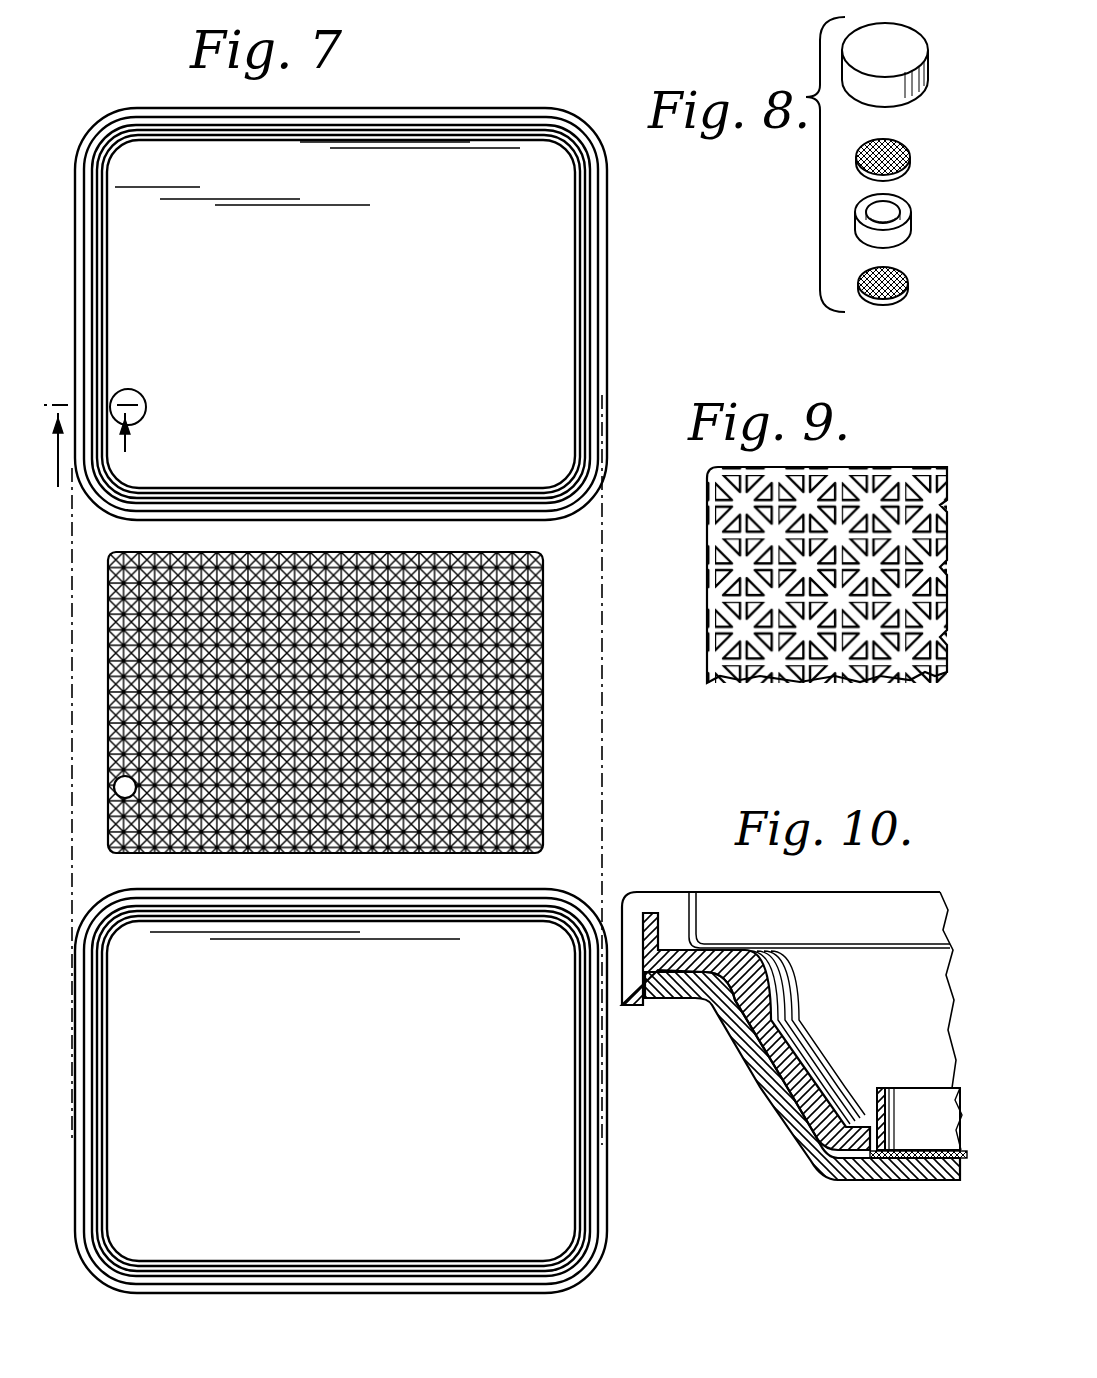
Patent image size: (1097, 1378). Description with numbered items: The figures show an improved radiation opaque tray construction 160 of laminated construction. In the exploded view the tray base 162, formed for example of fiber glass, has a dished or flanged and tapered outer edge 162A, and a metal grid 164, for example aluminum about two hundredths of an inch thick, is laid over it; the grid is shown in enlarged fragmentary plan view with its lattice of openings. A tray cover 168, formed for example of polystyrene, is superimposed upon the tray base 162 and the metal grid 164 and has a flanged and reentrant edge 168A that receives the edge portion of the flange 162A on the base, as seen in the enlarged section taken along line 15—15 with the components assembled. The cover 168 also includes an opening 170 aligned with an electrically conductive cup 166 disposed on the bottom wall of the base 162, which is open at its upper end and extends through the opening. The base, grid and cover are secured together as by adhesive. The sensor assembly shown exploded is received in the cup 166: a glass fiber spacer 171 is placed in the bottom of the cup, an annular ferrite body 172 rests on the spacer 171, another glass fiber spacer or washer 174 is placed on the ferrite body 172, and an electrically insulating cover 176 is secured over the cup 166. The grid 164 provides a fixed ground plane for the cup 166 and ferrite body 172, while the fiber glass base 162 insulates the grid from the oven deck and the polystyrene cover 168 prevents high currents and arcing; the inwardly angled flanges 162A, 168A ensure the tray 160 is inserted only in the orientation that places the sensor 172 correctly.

In FIG. 7, the tray construction 160 is at (448, 88).
In FIG. 7, the tray cover 168 is at (455, 157).
In FIG. 7, the opening 170 is at (140, 400).
In FIG. 7, the section line 15 is at (322, 770).
In FIG. 7, the metal grid 164 is at (539, 708).
In FIG. 9, the metal grid 164 is at (707, 522).
In FIG. 10, the metal grid 164 is at (870, 1178).
In FIG. 7, the tray base 162 is at (300, 1250).
In FIG. 8, the electrically insulating cover 176 is at (904, 42).
In FIG. 8, the glass fiber spacer or washer 174 is at (900, 152).
In FIG. 8, the annular ferrite body 172 is at (905, 222).
In FIG. 8, the glass fiber spacer 171 is at (900, 285).
In FIG. 10, the flanged and reentrant edge 168A is at (667, 890).
In FIG. 10, the flanged and tapered outer edge 162A is at (755, 1065).
In FIG. 10, the electrically conductive cup 166 is at (873, 1090).